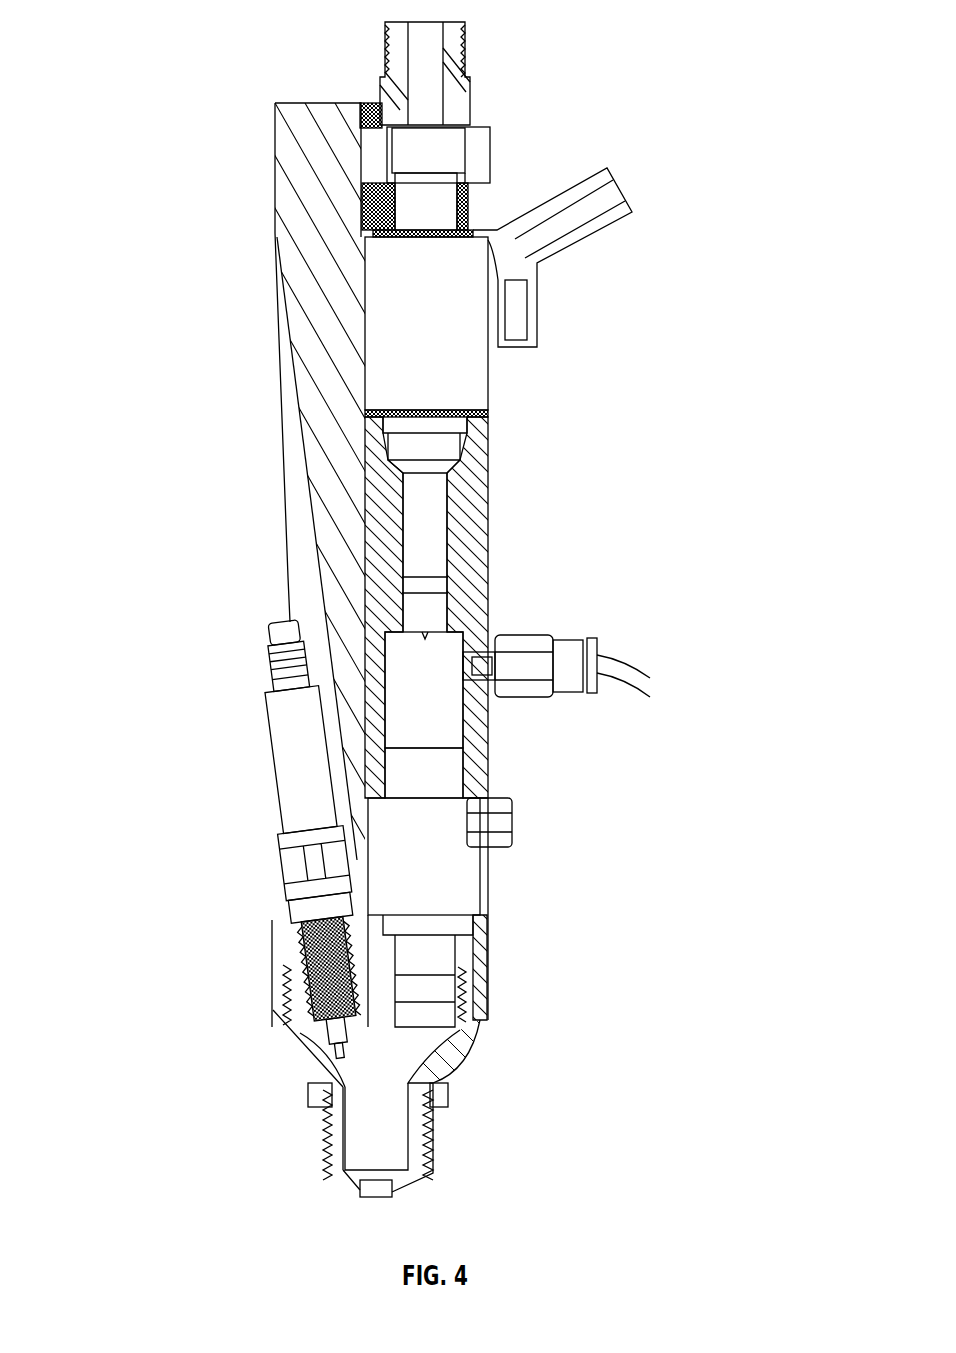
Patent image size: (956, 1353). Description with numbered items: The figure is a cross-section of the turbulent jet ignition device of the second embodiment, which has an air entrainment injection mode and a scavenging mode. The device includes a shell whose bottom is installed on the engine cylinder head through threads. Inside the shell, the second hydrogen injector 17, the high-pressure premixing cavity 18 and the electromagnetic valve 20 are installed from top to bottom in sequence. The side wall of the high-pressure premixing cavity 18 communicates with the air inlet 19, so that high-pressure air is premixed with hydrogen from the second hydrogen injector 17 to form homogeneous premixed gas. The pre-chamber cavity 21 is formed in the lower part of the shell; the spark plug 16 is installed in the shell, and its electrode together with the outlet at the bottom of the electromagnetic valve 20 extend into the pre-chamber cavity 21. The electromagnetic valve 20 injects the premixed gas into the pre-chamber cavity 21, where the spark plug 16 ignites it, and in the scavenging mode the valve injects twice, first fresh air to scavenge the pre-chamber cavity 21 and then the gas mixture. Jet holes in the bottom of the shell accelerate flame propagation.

The spark plug 16 is at (325, 888).
The second hydrogen injector 17 is at (425, 390).
The high-pressure premixing cavity 18 is at (430, 668).
The air inlet 19 is at (587, 670).
The electromagnetic valve 20 is at (437, 907).
The pre-chamber cavity 21 is at (383, 1108).